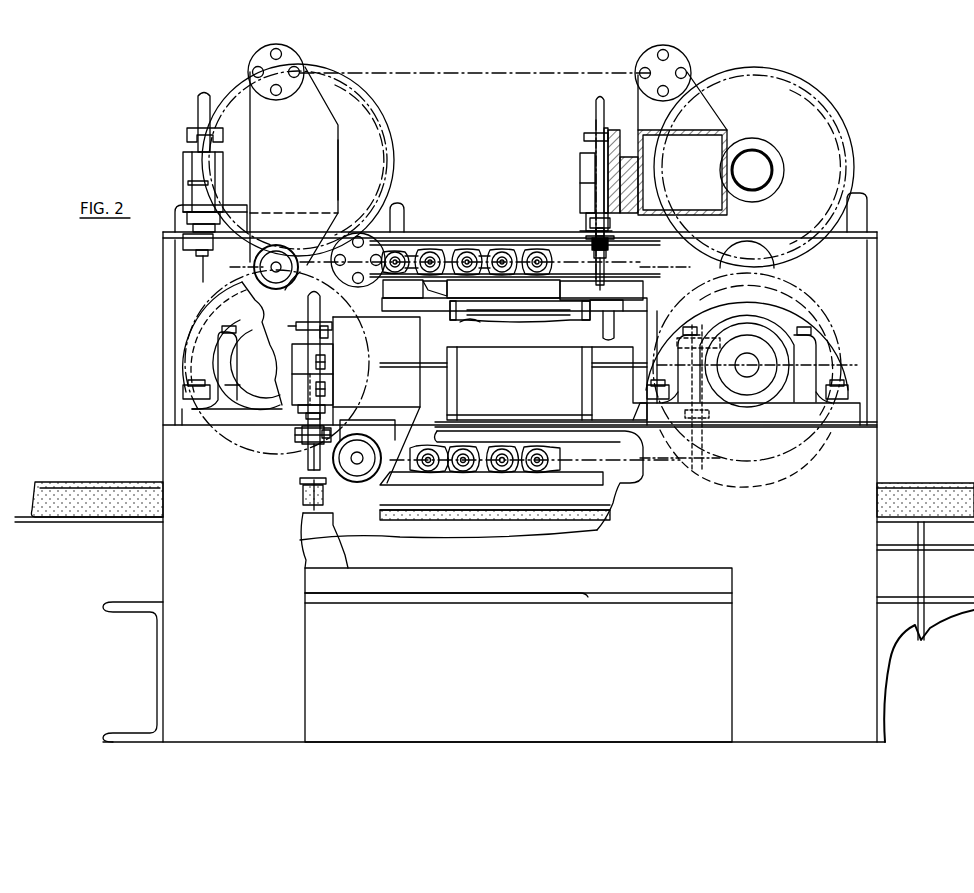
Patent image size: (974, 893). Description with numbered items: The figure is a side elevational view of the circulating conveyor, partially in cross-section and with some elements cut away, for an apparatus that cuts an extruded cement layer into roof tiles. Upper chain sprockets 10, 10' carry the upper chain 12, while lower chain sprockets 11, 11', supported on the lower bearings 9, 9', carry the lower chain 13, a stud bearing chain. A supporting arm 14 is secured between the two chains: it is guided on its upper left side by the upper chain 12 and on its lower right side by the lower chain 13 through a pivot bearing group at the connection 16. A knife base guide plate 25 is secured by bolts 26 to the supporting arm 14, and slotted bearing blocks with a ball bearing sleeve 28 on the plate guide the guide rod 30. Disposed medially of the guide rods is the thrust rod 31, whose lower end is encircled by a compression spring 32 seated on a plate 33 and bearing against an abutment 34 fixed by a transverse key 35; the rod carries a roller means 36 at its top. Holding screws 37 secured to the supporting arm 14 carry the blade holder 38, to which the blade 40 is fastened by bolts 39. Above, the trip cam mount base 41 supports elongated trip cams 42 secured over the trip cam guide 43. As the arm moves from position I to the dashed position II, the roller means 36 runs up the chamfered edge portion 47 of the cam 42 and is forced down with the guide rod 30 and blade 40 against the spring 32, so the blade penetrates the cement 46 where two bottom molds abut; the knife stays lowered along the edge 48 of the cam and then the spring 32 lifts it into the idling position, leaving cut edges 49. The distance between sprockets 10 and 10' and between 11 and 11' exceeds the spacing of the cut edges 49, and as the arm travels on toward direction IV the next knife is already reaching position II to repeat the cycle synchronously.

The lower bearing 9 is at (198, 372).
The lower bearing 9' is at (772, 393).
The upper chain sprocket 10 is at (426, 166).
The upper chain sprocket 10' is at (763, 156).
The lower chain sprocket 11 is at (239, 362).
The lower chain sprocket 11' is at (783, 380).
The upper chain 12 is at (445, 255).
The lower chain 13 is at (510, 463).
The supporting arm 14 is at (410, 352).
The connection 16 is at (385, 440).
The knife base guide plate 25 is at (630, 160).
The bolts 26 is at (325, 385).
The ball bearing sleeve 28 is at (325, 362).
The guide rod 30 is at (300, 345).
The thrust rod 31 is at (612, 128).
The compression spring 32 is at (640, 180).
The plate 33 is at (618, 228).
The abutment 34 is at (614, 140).
The transverse key 35 is at (595, 150).
The roller means 36 is at (600, 100).
The holding screws 37 is at (590, 225).
The blade holder 38 is at (595, 245).
The bolts 39 is at (615, 240).
The blade 40 is at (603, 265).
The trip cam mount base 41 is at (440, 315).
The trip cam 42 is at (525, 320).
The trip cam guide 43 is at (467, 292).
The cement 46 is at (640, 470).
The chamfered edge portion 47 is at (610, 320).
The edge 48 is at (487, 322).
The cut edges 49 is at (305, 495).
The position I is at (580, 182).
The position II is at (237, 395).
The direction IV is at (322, 178).